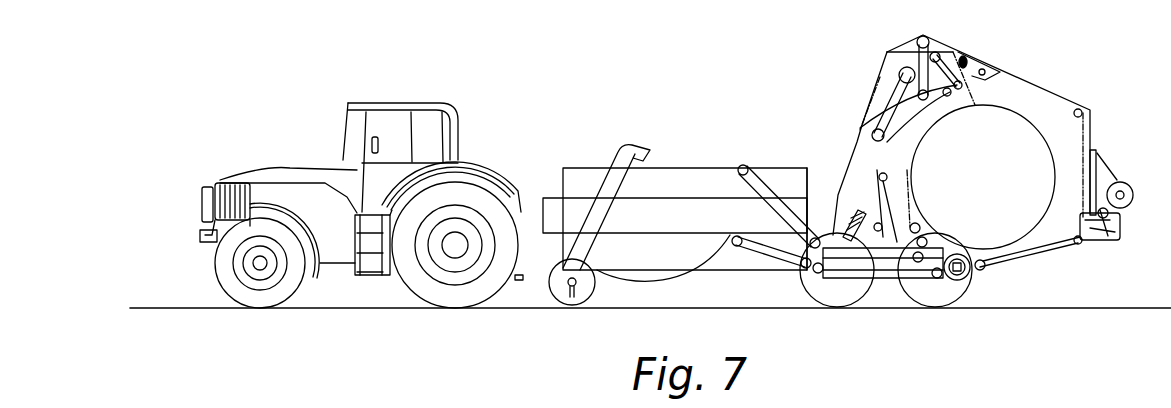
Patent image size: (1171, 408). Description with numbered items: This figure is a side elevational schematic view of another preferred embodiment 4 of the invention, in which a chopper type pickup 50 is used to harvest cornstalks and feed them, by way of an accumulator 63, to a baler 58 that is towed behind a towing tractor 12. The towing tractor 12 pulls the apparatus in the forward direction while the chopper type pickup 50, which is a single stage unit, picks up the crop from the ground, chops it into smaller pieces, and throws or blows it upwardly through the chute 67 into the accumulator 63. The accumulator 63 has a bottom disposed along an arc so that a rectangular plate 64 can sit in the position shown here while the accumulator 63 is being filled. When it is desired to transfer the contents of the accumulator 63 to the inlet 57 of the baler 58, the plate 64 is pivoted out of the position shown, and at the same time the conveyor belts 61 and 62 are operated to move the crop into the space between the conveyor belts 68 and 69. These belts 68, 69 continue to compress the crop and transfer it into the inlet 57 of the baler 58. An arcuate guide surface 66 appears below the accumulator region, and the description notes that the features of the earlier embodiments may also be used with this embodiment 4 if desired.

The preferred embodiment 4 is at (713, 97).
The towing tractor 12 is at (490, 168).
The chopper type pickup 50 is at (565, 285).
The inlet 57 is at (933, 248).
The baler 58 is at (1018, 100).
The conveyor belt 61 is at (787, 258).
The conveyor belt 62 is at (790, 210).
The accumulator 63 is at (722, 172).
The rectangular plate 64 is at (627, 210).
The arcuate guide 66 is at (672, 283).
The chute 67 is at (592, 213).
The conveyor belt 68 is at (892, 270).
The conveyor belt 69 is at (868, 322).